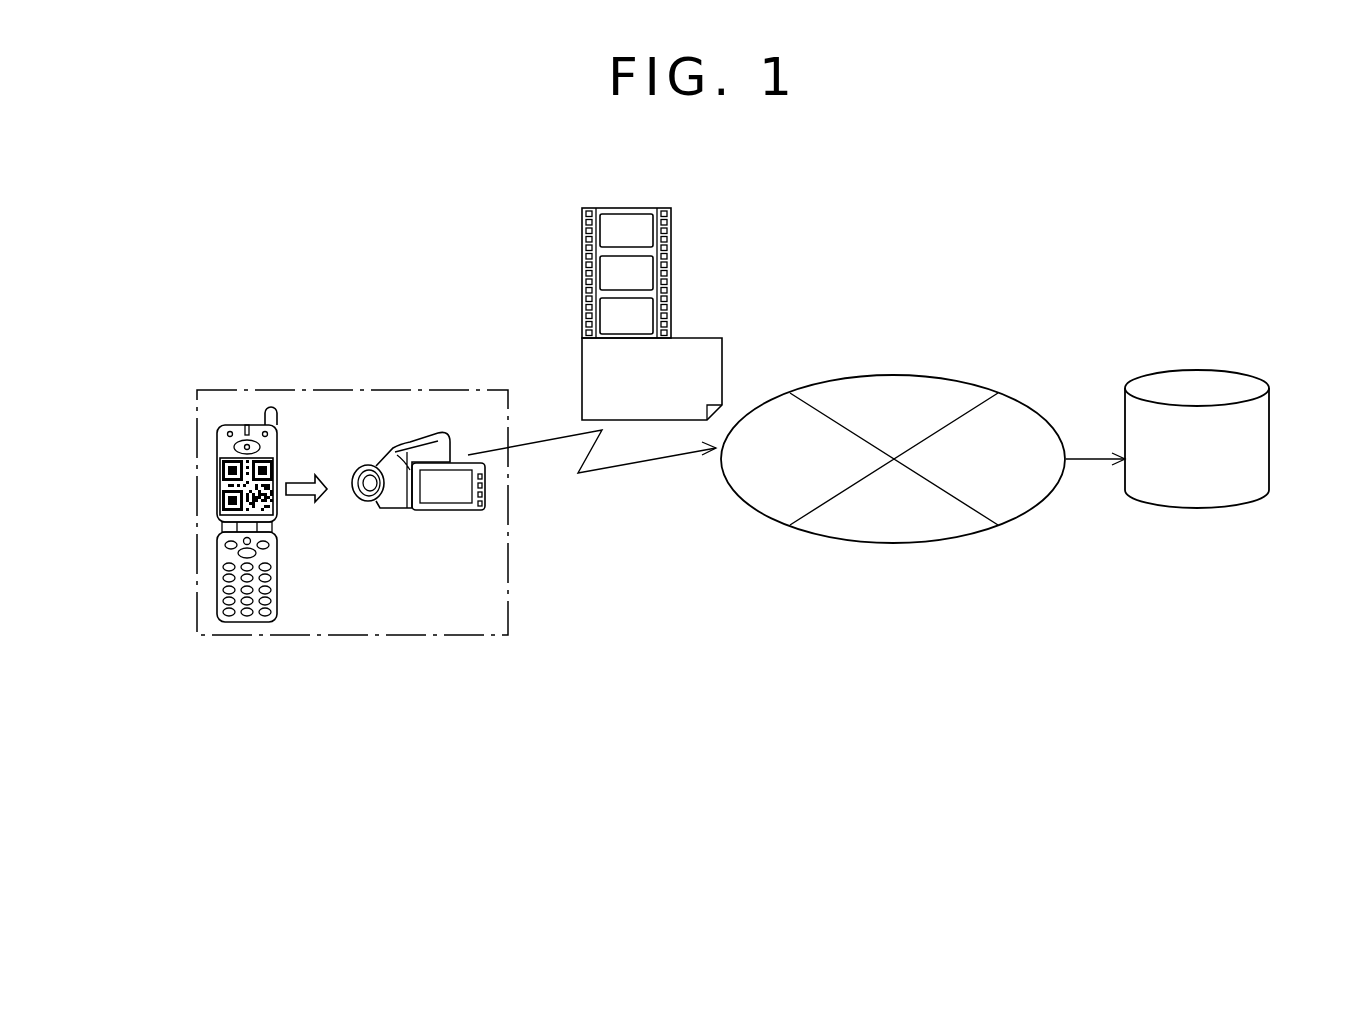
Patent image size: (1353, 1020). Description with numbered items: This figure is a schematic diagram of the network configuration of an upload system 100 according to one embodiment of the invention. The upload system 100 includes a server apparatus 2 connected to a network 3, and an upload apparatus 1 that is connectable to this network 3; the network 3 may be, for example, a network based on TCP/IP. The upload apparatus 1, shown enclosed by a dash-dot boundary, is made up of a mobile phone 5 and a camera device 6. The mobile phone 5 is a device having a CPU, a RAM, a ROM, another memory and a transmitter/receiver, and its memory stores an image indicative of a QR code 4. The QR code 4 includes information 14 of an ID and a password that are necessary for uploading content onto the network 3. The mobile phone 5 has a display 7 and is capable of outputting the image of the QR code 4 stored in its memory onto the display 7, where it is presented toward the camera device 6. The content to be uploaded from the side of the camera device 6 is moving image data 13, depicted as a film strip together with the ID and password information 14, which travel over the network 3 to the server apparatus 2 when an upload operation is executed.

The upload system 100 is at (957, 248).
The upload apparatus 1 is at (299, 389).
The server apparatus 2 is at (1200, 507).
The network 3 is at (893, 543).
The QR code 4 is at (225, 490).
The mobile phone 5 is at (247, 622).
The camera device 6 is at (391, 452).
The display 7 is at (232, 459).
The moving image data 13 is at (671, 226).
The information 14 is at (722, 350).